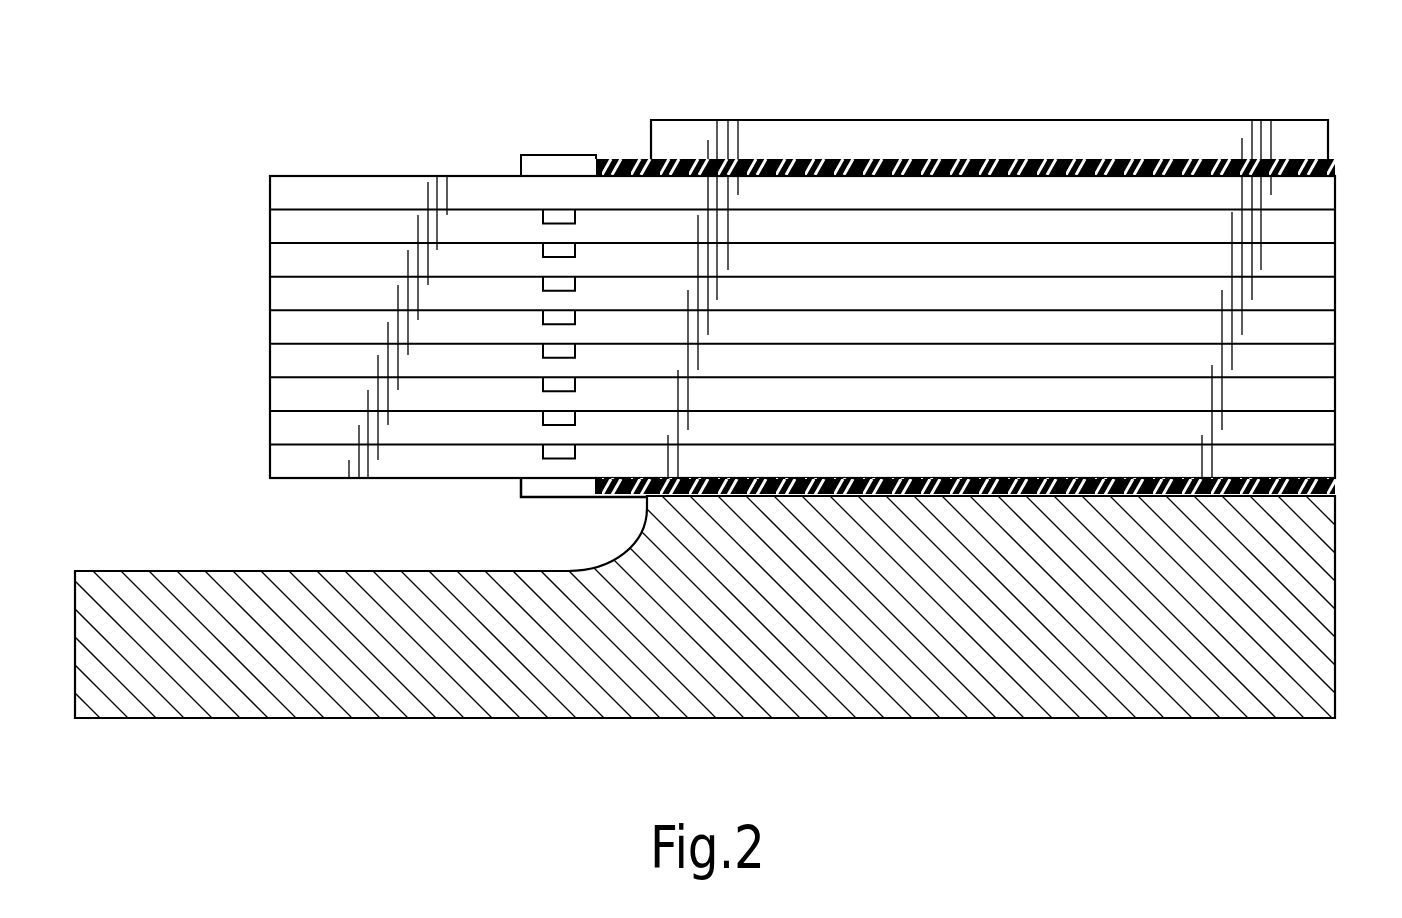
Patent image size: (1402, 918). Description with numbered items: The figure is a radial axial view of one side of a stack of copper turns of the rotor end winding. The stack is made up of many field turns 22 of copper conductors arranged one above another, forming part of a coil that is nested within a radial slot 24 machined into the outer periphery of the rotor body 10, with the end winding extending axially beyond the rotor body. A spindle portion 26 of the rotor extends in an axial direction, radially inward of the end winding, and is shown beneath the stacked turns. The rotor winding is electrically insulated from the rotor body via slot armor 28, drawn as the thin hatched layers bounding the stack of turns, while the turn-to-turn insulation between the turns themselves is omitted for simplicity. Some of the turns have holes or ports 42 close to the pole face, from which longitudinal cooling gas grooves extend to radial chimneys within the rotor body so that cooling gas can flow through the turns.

The rotor body 10 is at (922, 692).
The field turns 22 is at (432, 423).
The radial slots 24 is at (819, 130).
The spindle portion 26 is at (460, 675).
The slot armor 28 is at (1335, 480).
The holes or ports 42 is at (566, 255).